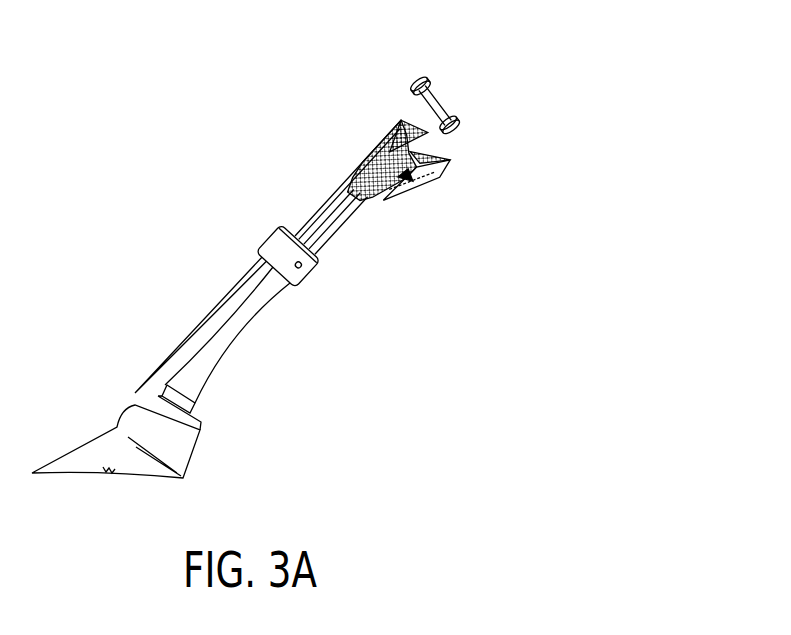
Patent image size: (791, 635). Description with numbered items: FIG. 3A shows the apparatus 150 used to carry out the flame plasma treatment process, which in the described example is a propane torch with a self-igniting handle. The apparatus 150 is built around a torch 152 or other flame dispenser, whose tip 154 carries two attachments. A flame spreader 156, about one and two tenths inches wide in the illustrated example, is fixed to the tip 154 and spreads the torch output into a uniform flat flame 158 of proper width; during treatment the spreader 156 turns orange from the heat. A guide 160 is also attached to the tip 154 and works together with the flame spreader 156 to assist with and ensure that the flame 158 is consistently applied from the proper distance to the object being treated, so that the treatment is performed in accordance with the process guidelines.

The apparatus 150 is at (129, 126).
The torch 152 is at (125, 427).
The tip 154 is at (313, 222).
The flame spreader 156 is at (362, 160).
The flame 158 is at (432, 188).
The guide 160 is at (420, 78).